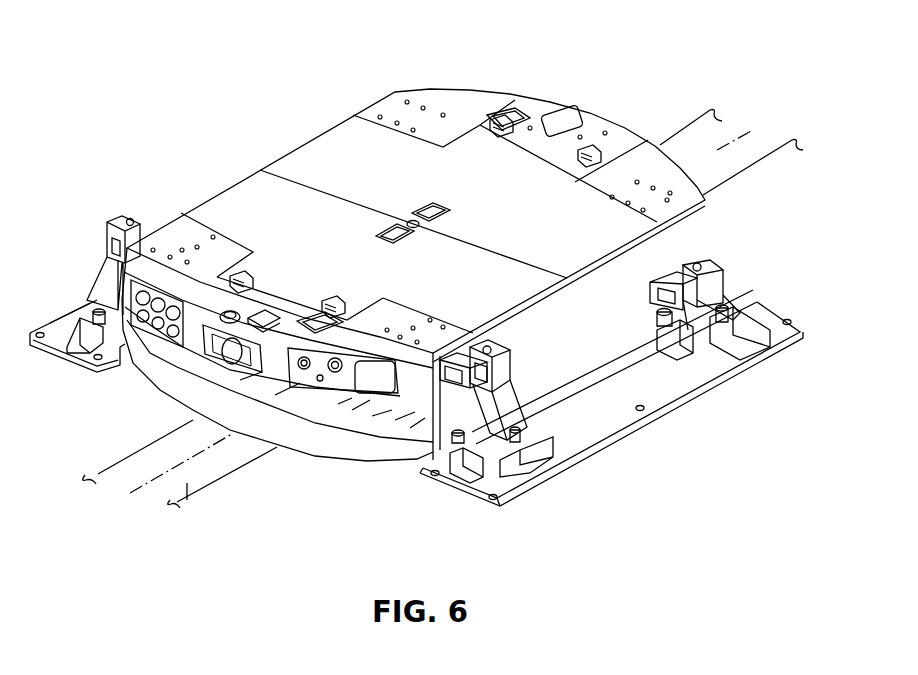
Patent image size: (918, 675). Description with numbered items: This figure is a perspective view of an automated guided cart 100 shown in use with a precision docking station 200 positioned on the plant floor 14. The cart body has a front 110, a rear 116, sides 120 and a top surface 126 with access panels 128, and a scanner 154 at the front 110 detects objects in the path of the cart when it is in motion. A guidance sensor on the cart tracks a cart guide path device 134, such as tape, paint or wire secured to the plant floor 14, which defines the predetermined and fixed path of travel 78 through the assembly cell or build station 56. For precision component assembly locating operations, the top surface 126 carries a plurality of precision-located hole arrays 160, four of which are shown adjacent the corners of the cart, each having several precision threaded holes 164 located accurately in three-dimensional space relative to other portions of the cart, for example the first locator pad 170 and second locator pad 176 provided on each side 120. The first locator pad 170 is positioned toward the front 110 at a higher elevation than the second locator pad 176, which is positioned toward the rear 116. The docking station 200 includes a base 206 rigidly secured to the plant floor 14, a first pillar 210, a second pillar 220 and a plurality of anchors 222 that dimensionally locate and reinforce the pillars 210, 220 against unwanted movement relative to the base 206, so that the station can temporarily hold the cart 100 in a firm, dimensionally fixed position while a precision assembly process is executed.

The plant floor 14 is at (166, 105).
The assembly cell or build station 56 is at (143, 490).
The path of travel 78 is at (138, 452).
The automated guided cart 100 is at (272, 68).
The front 110 is at (313, 478).
The rear 116 is at (662, 110).
The sides 120 is at (305, 143).
The top surface 126 is at (206, 278).
The access panels 128 is at (295, 249).
The cart guide path device 134 is at (187, 498).
The scanner 154 is at (232, 358).
The precision-located hole arrays 160 is at (190, 225).
The precision threaded holes 164 is at (621, 175).
The first locator pad 170 is at (440, 375).
The second locator pad 176 is at (683, 265).
The docking station 200 is at (715, 397).
The base 206 is at (644, 420).
The first pillar 210 is at (487, 435).
The second pillar 220 is at (740, 282).
The anchors 222 is at (527, 462).